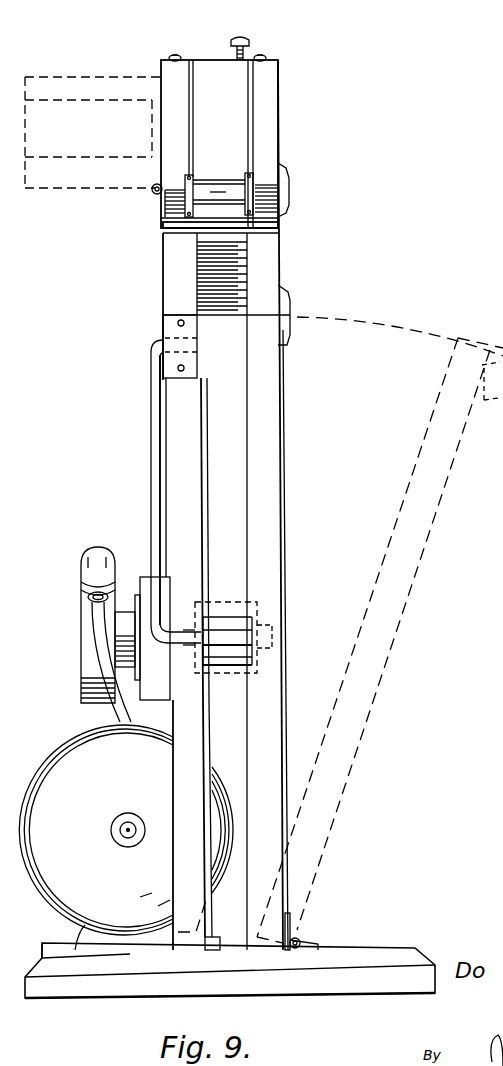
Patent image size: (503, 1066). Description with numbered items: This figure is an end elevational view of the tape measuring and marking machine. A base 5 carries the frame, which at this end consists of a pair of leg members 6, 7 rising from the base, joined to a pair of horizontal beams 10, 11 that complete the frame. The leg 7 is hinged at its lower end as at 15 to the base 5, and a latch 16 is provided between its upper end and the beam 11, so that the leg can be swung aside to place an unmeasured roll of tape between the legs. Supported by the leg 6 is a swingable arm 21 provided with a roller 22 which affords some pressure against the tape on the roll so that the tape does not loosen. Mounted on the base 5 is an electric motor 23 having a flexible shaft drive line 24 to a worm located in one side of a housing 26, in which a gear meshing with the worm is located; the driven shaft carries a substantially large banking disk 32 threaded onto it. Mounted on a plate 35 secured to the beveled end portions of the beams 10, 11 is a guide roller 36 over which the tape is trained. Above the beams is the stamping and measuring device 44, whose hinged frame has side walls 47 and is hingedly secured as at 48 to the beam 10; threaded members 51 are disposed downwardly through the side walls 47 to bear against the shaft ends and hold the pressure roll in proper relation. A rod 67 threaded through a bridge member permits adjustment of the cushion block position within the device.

The base 5 is at (345, 960).
The leg member 6 is at (178, 447).
The leg member 7 is at (270, 428).
The horizontal beam 10 is at (170, 281).
The horizontal beam 11 is at (270, 258).
The hinge 15 is at (300, 938).
The latch 16 is at (291, 341).
The swingable arm 21 is at (153, 480).
The roller 22 is at (228, 616).
The electric motor 23 is at (65, 768).
The flexible shaft drive line 24 is at (125, 712).
The housing 26 is at (86, 628).
The banking disk 32 is at (213, 712).
The plate 35 is at (262, 220).
The guide roller 36 is at (217, 178).
The stamping and measuring device 44 is at (67, 190).
The side wall 47 is at (170, 72).
The hinge 48 is at (155, 196).
The threaded member 51 is at (177, 55).
The rod 67 is at (245, 42).